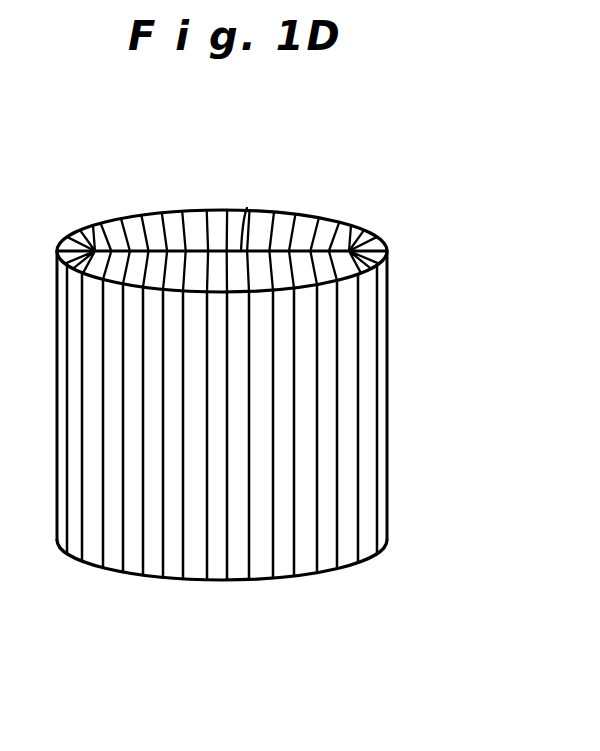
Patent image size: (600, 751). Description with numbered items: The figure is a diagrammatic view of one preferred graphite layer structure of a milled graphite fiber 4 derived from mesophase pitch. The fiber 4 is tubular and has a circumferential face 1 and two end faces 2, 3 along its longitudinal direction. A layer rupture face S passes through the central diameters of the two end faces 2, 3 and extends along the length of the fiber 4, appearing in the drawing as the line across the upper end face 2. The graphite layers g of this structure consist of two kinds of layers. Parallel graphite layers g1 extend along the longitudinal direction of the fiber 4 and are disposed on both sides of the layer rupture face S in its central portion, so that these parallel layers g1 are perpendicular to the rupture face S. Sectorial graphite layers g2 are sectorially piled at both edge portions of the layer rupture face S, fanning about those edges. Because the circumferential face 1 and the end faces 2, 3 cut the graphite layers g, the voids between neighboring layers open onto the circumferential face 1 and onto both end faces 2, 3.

The circumferential face 1 is at (392, 330).
The end face 2 is at (295, 209).
The end face 3 is at (271, 583).
The milled graphite fiber 4 is at (365, 198).
The layer rupture face S is at (247, 208).
The graphite layer g is at (227, 141).
The parallel graphite layer g1 is at (172, 605).
The sectorial graphite layer g2 is at (70, 508).